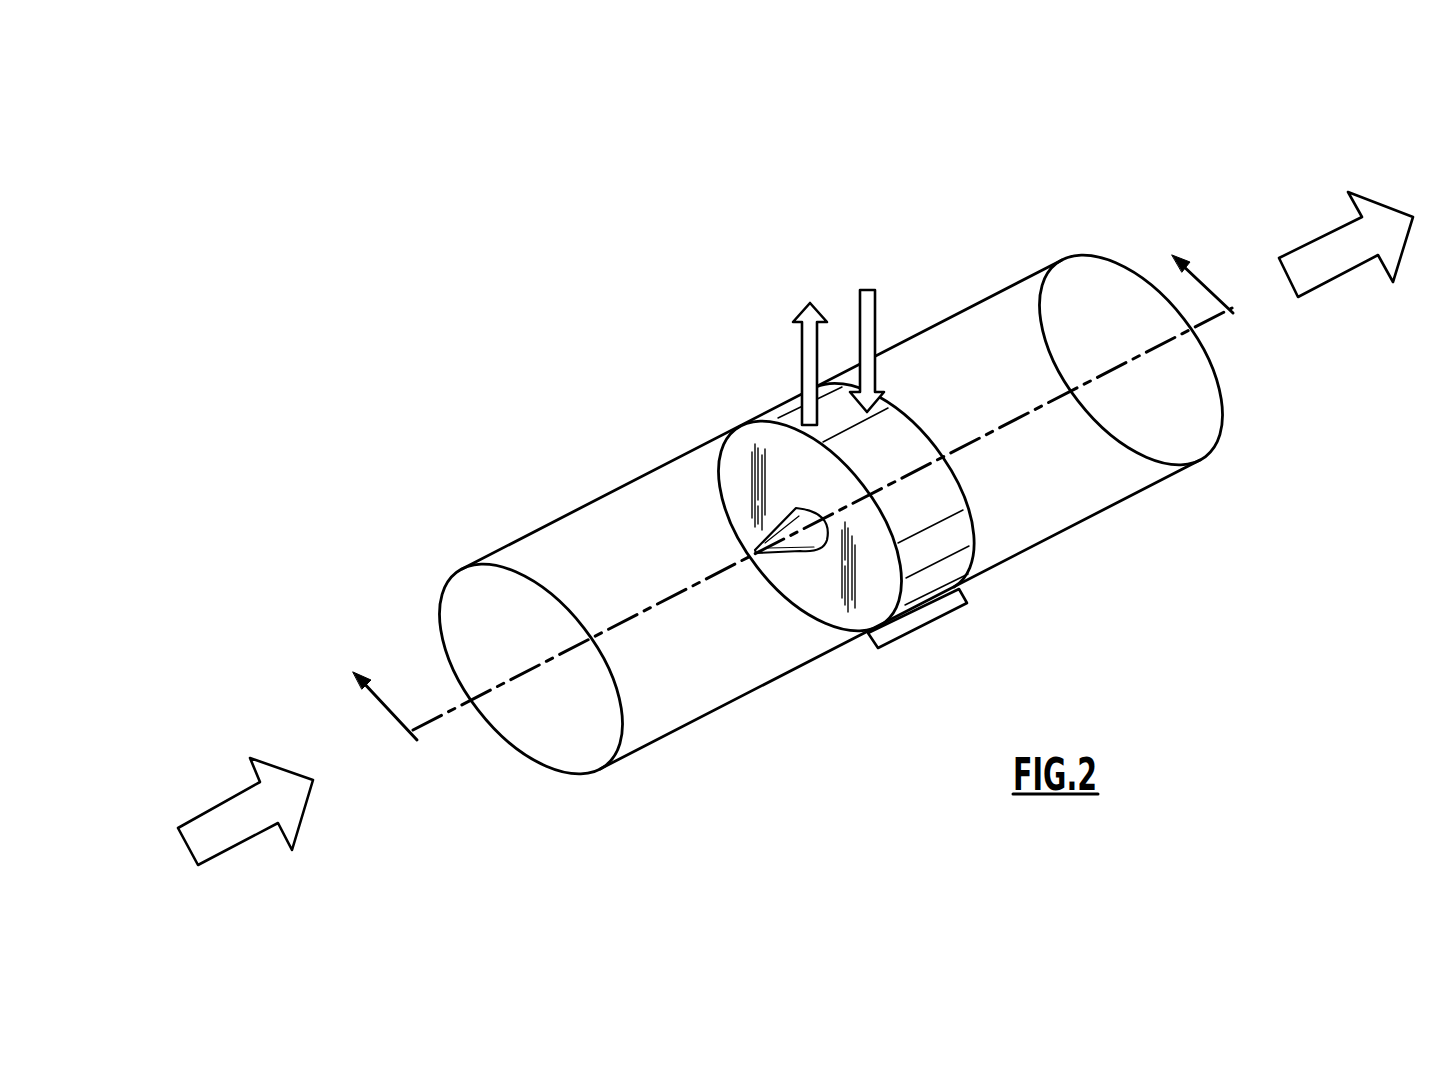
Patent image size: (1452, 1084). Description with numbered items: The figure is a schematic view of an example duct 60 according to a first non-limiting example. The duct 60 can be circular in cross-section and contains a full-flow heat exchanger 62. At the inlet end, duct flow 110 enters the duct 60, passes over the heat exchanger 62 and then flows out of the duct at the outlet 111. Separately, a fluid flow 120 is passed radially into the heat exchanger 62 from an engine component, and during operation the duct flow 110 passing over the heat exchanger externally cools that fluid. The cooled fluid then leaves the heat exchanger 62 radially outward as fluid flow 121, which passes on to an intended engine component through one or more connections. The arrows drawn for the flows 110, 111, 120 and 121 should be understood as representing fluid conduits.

The duct 60 is at (494, 452).
The full-flow heat exchanger 62 is at (928, 625).
The duct flow 110 is at (218, 803).
The outlet flow 111 is at (1382, 200).
The fluid flow 120 is at (871, 289).
The fluid flow 121 is at (801, 314).